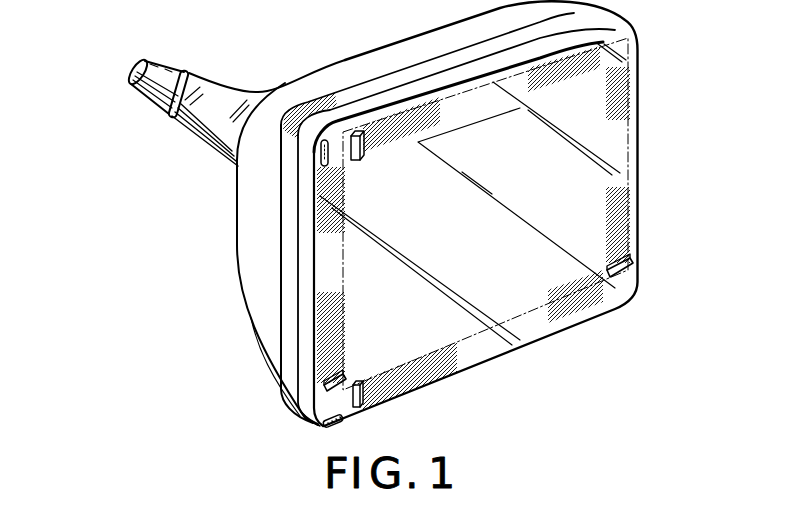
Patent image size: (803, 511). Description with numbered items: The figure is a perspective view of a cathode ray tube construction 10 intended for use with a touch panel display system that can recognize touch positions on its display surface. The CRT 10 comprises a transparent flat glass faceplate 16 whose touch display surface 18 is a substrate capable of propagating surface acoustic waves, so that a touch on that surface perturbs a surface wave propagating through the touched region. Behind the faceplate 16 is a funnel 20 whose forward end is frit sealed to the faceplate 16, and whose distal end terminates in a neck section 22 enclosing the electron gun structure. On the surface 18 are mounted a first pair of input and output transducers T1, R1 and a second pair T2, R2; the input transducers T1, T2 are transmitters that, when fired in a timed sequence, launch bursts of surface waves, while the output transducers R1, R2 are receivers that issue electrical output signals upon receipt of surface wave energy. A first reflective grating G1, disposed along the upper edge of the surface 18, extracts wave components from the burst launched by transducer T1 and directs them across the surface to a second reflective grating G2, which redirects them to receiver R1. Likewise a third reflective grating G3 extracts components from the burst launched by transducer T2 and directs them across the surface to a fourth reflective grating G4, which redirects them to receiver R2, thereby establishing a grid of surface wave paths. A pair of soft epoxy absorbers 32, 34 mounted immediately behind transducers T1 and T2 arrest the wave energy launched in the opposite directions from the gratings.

The cathode ray tube construction 10 is at (423, 23).
The transparent flat glass faceplate 16 is at (303, 412).
The touch display surface 18 is at (528, 282).
The funnel 20 is at (250, 311).
The neck section 22 is at (138, 110).
The absorber 32 is at (320, 158).
The absorber 34 is at (339, 427).
The input surface wave transducer T1 is at (349, 138).
The input surface wave transducer T2 is at (333, 392).
The output surface wave transducer R1 is at (362, 407).
The output surface wave transducer R2 is at (633, 268).
The first reflective grating G1 is at (403, 140).
The second reflective grating G2 is at (443, 347).
The third reflective grating G3 is at (343, 300).
The fourth reflective grating G4 is at (607, 220).